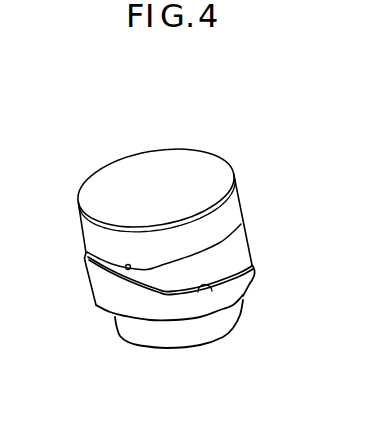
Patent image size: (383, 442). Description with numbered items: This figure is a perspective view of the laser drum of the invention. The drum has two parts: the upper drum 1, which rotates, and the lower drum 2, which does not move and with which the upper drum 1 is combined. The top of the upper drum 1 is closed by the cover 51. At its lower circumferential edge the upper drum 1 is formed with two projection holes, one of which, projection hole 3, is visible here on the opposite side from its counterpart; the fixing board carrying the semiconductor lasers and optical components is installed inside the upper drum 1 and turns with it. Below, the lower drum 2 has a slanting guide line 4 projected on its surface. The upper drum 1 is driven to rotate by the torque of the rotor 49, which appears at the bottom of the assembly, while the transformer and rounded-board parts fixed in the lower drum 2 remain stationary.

The upper drum 1 is at (235, 188).
The lower drum 2 is at (243, 247).
The projection hole 3 is at (126, 270).
The slanting guide line 4 is at (212, 292).
The rotor 49 is at (177, 340).
The cover 51 is at (102, 185).